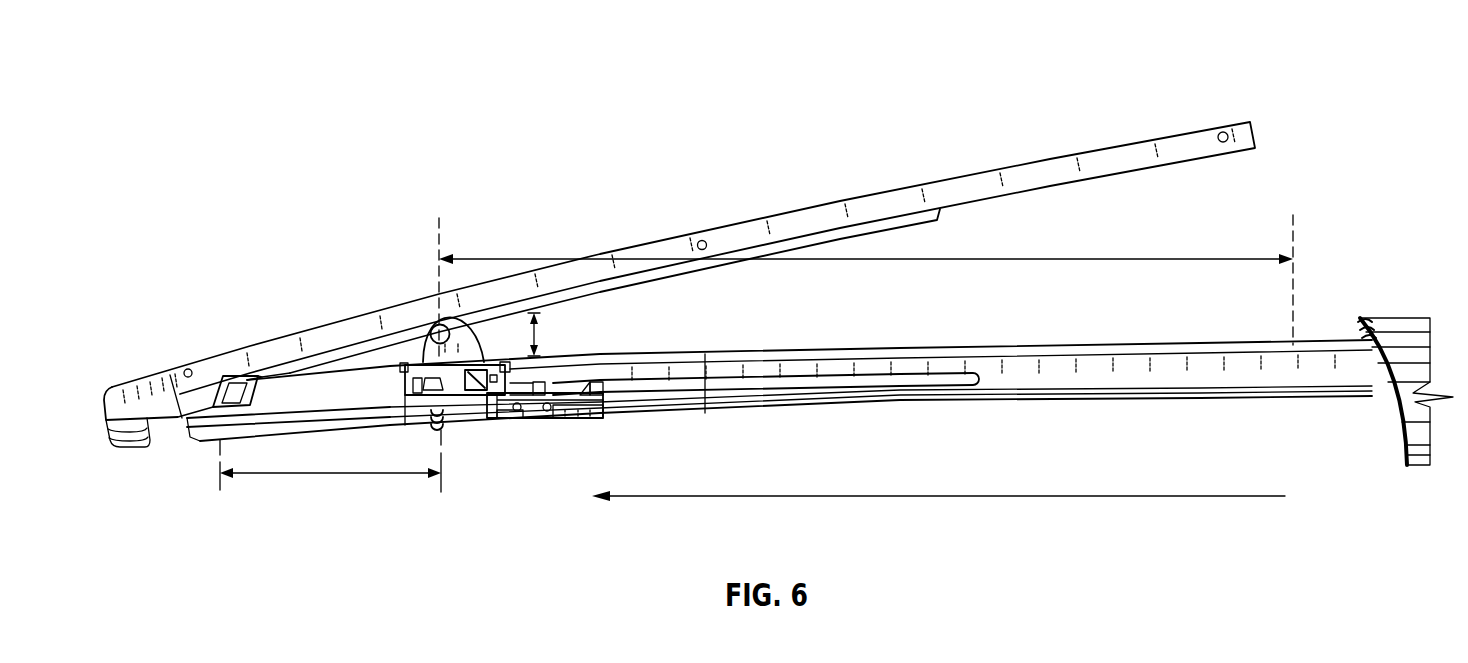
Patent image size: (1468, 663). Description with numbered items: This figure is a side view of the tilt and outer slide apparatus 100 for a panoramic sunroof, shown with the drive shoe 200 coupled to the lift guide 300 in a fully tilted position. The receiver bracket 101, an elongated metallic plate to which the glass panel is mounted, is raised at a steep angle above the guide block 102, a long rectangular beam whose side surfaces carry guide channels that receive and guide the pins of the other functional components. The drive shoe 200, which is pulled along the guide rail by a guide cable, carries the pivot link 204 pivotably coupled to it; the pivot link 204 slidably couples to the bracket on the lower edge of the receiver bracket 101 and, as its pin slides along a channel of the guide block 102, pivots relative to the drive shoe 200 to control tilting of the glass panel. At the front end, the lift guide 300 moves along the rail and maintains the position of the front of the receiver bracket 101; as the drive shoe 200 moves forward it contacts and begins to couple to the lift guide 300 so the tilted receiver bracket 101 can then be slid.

The tilt and outer slide apparatus 100 is at (161, 70).
The receiver bracket 101 is at (907, 183).
The guide block 102 is at (1091, 398).
The drive shoe 200 is at (495, 420).
The pivot link 204 is at (425, 330).
The lift guide 300 is at (202, 441).